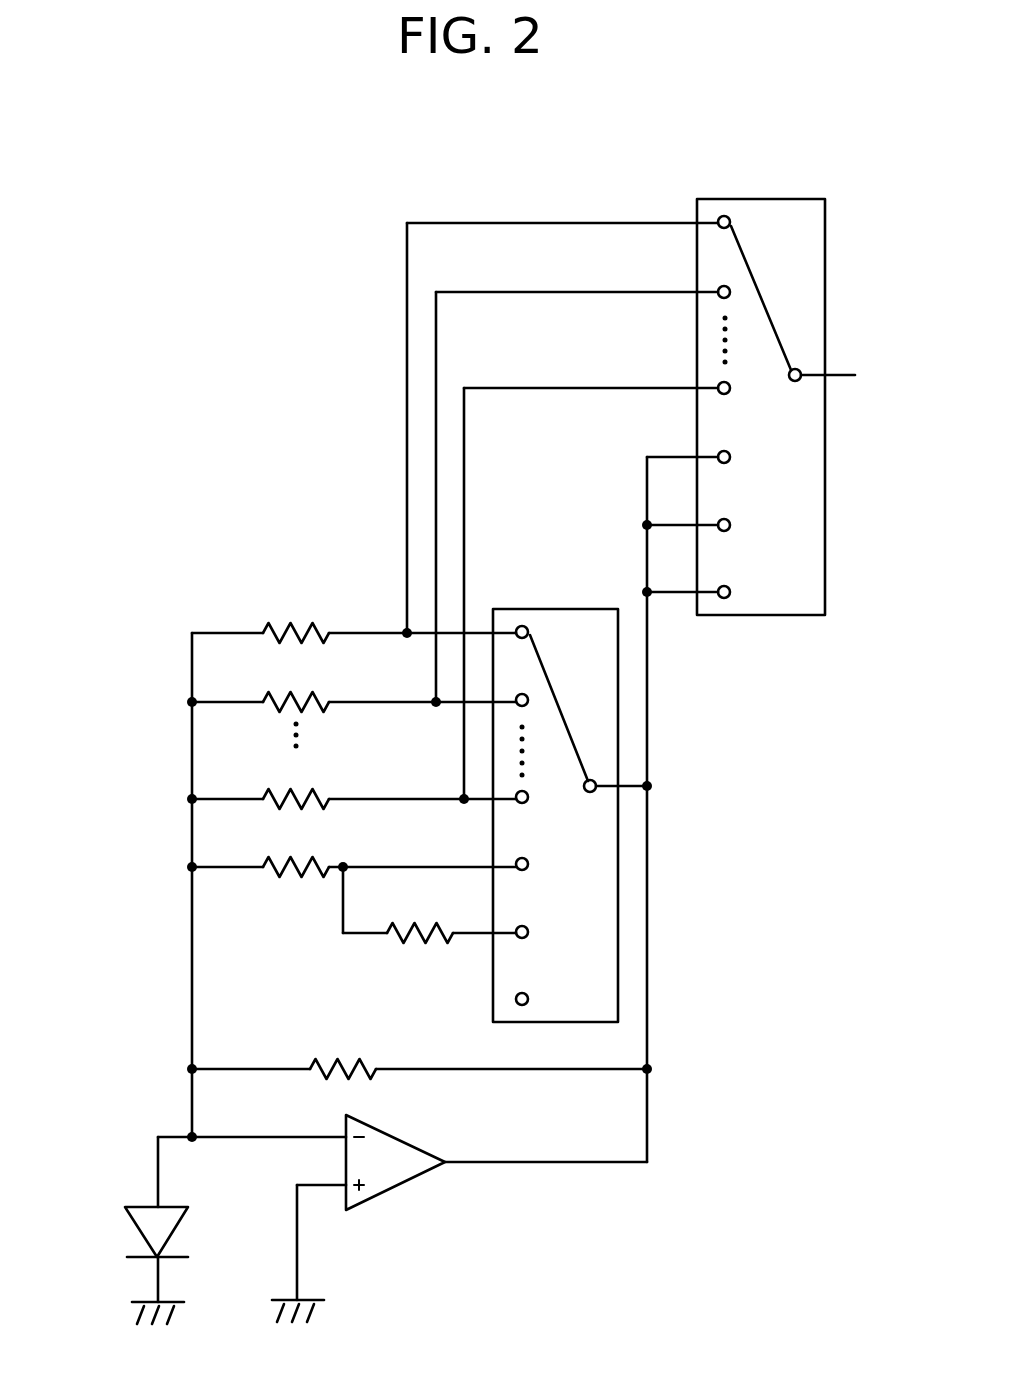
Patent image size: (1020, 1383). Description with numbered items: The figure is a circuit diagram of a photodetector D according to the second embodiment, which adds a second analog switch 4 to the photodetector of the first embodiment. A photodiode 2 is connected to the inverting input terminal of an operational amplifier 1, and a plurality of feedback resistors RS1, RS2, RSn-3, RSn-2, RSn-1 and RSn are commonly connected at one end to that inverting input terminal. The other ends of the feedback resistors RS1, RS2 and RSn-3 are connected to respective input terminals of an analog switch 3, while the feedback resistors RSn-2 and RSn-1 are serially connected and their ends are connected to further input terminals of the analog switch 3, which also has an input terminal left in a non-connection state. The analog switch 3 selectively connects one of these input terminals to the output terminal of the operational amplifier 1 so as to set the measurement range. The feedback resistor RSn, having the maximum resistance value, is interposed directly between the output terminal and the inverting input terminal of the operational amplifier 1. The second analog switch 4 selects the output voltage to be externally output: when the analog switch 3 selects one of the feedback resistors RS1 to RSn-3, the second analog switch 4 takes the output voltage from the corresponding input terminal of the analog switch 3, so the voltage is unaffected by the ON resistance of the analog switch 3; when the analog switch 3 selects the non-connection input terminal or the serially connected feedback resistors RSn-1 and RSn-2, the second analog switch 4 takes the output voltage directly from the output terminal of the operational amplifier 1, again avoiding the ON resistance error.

The operational amplifier 1 is at (397, 1193).
The photodiode 2 is at (177, 1228).
The analog switch 3 is at (558, 609).
The second analog switch 4 is at (760, 199).
The photodetector D is at (328, 276).
The feedback resistor RS1 is at (455, 433).
The feedback resistor RS2 is at (455, 502).
The feedback resistor RSn-3 is at (455, 598).
The feedback resistor RSn-2 is at (354, 850).
The feedback resistor RSn-1 is at (429, 905).
The feedback resistor RSn is at (419, 1052).